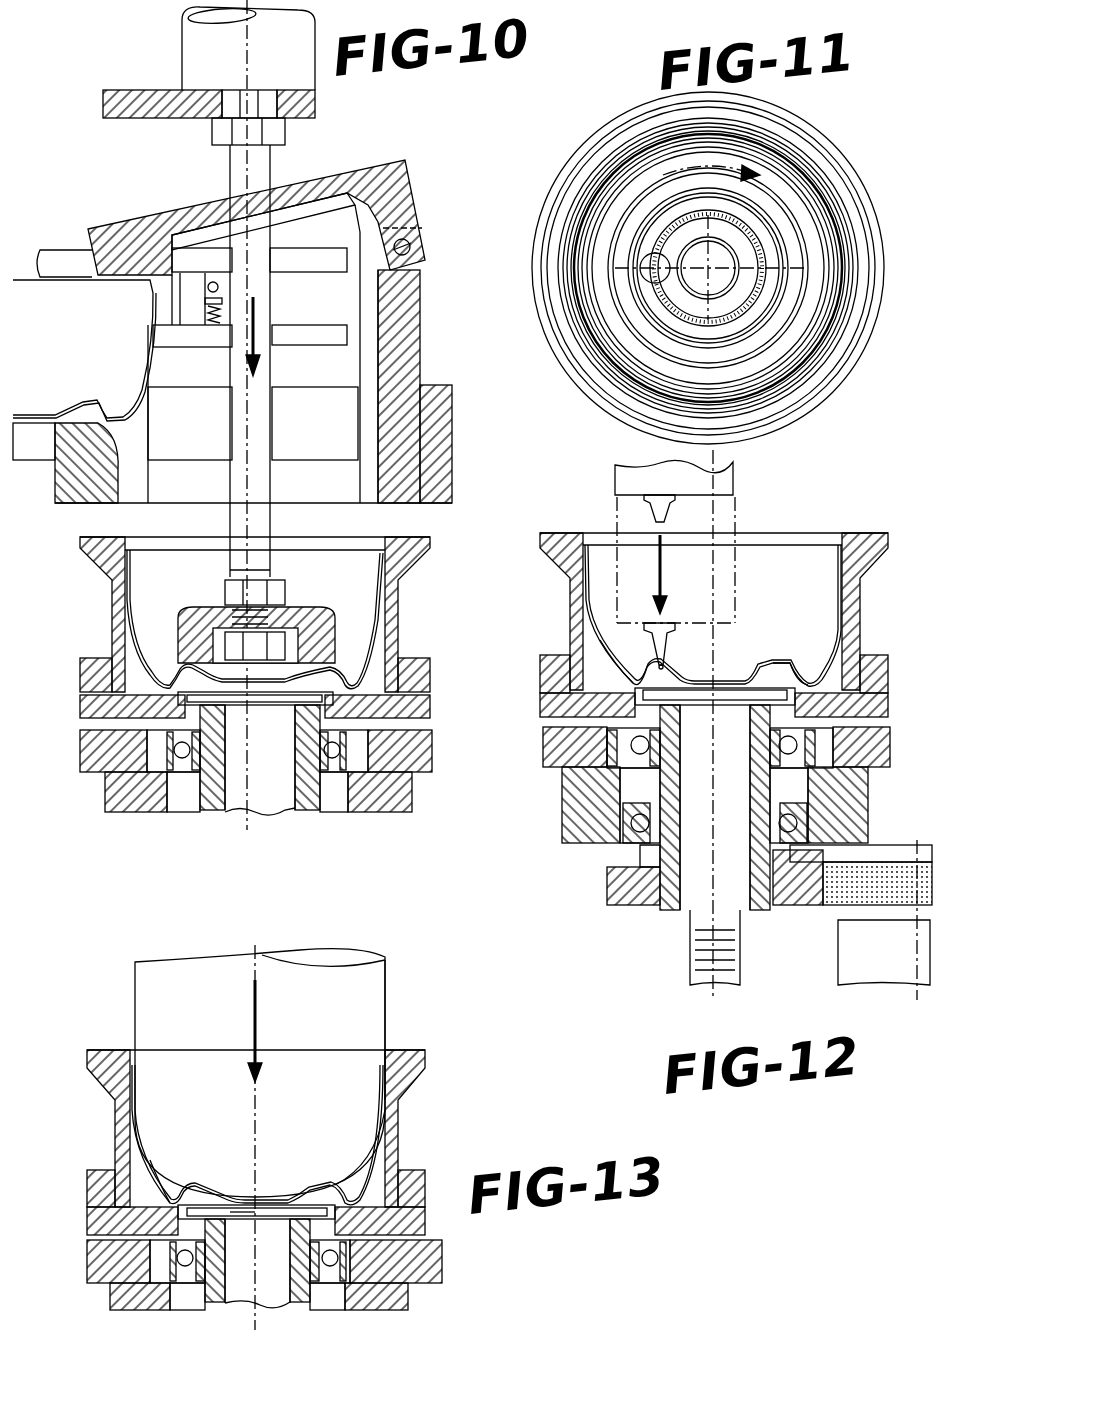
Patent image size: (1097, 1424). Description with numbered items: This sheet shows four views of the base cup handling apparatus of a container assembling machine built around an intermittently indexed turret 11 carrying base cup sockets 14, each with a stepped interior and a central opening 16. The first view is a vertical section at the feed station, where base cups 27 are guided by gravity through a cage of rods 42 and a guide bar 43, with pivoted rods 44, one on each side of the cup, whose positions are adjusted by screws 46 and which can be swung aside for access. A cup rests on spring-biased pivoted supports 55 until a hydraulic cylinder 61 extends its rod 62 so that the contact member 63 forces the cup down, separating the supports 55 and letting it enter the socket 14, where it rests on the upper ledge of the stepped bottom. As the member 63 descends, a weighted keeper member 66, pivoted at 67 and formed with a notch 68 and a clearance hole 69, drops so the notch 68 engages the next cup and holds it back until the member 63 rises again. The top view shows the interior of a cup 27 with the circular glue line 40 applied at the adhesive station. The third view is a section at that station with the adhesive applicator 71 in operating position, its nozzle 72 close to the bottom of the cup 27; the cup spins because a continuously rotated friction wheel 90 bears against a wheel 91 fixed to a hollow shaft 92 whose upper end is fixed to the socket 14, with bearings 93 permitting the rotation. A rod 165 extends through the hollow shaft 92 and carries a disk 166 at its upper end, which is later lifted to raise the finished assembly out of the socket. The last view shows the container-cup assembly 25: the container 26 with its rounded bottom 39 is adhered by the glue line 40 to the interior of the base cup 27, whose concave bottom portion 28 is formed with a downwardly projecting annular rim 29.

In FIG. 10, the turret 11 is at (92, 775).
In FIG. 12, the turret 11 is at (546, 745).
In FIG. 13, the turret 11 is at (446, 1264).
In FIG. 10, the base cup socket 14 is at (92, 565).
In FIG. 11, the base cup socket 14 is at (563, 182).
In FIG. 12, the base cup socket 14 is at (566, 530).
In FIG. 13, the base cup socket 14 is at (428, 1058).
In FIG. 12, the central opening 16 is at (590, 668).
In FIG. 13, the container-cup assembly 25 is at (400, 1028).
In FIG. 13, the container 26 is at (384, 992).
In FIG. 10, the base cup 27 is at (133, 383).
In FIG. 11, the base cup 27 is at (622, 168).
In FIG. 12, the base cup 27 is at (836, 652).
In FIG. 13, the base cup 27 is at (397, 1155).
In FIG. 12, the concave bottom portion 28 is at (728, 685).
In FIG. 13, the concave bottom portion 28 is at (265, 1202).
In FIG. 12, the annular rim 29 is at (625, 670).
In FIG. 13, the annular rim 29 is at (170, 1185).
In FIG. 13, the rounded bottom 39 is at (366, 1155).
In FIG. 11, the glue line 40 is at (742, 220).
In FIG. 12, the glue line 40 is at (663, 668).
In FIG. 13, the glue line 40 is at (208, 1205).
In FIG. 10, the rods 42 is at (306, 340).
In FIG. 10, the guide bar 43 is at (33, 455).
In FIG. 10, the rods 44 is at (60, 258).
In FIG. 10, the screws 46 is at (220, 290).
In FIG. 10, the pivoted supports 55 is at (350, 407).
In FIG. 10, the hydraulic cylinder 61 is at (182, 40).
In FIG. 10, the rod 62 is at (270, 478).
In FIG. 10, the contact member 63 is at (290, 610).
In FIG. 10, the keeper member 66 is at (410, 165).
In FIG. 10, the pivot 67 is at (412, 244).
In FIG. 10, the notch 68 is at (128, 290).
In FIG. 10, the clearance hole 69 is at (197, 232).
In FIG. 12, the adhesive applicator 71 is at (738, 582).
In FIG. 11, the nozzle 72 is at (648, 280).
In FIG. 12, the nozzle 72 is at (668, 512).
In FIG. 12, the friction wheel 90 is at (870, 870).
In FIG. 12, the wheel 91 is at (607, 887).
In FIG. 10, the hollow shaft 92 is at (215, 812).
In FIG. 12, the hollow shaft 92 is at (664, 912).
In FIG. 13, the hollow shaft 92 is at (305, 1300).
In FIG. 12, the bearings 93 is at (630, 746).
In FIG. 13, the bearings 93 is at (185, 1272).
In FIG. 10, the rod 165 is at (257, 800).
In FIG. 12, the rod 165 is at (692, 984).
In FIG. 13, the rod 165 is at (275, 1282).
In FIG. 12, the disk 166 is at (797, 655).
In FIG. 13, the disk 166 is at (243, 1208).